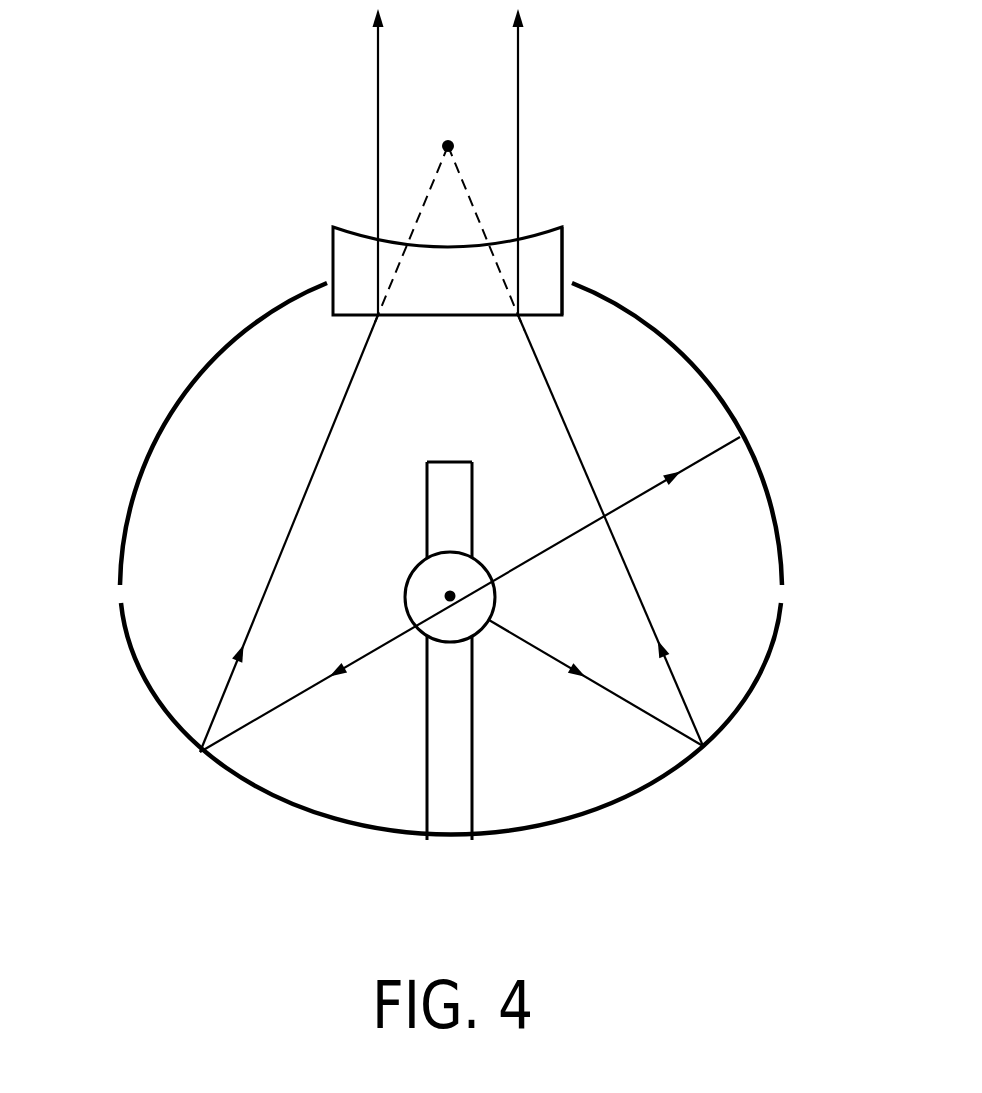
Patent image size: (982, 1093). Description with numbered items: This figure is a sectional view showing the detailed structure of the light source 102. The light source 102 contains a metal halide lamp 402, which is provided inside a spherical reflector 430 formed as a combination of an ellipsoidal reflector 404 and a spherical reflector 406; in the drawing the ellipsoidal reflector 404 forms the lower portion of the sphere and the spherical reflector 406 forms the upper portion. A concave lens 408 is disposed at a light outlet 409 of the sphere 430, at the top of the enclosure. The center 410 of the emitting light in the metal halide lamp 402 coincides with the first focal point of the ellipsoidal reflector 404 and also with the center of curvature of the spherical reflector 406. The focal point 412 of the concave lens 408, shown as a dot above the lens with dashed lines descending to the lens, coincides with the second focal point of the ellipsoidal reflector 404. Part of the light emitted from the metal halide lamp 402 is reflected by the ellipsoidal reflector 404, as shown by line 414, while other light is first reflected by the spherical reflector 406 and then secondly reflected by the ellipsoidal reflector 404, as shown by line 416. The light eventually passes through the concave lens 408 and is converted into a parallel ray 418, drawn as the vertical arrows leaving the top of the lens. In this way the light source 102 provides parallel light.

The light source 102 is at (652, 98).
The metal halide lamp 402 is at (408, 582).
The ellipsoidal reflector 404 is at (580, 825).
The spherical reflector 406 is at (206, 368).
The concave lens 408 is at (333, 262).
The light outlet 409 is at (567, 280).
The center of the emitting light 410 is at (451, 588).
The focal point of the concave lens 412 is at (452, 143).
The line 414 is at (684, 694).
The line 416 is at (233, 735).
The parallel ray 418 is at (378, 123).
The spherical reflector 430 is at (140, 722).